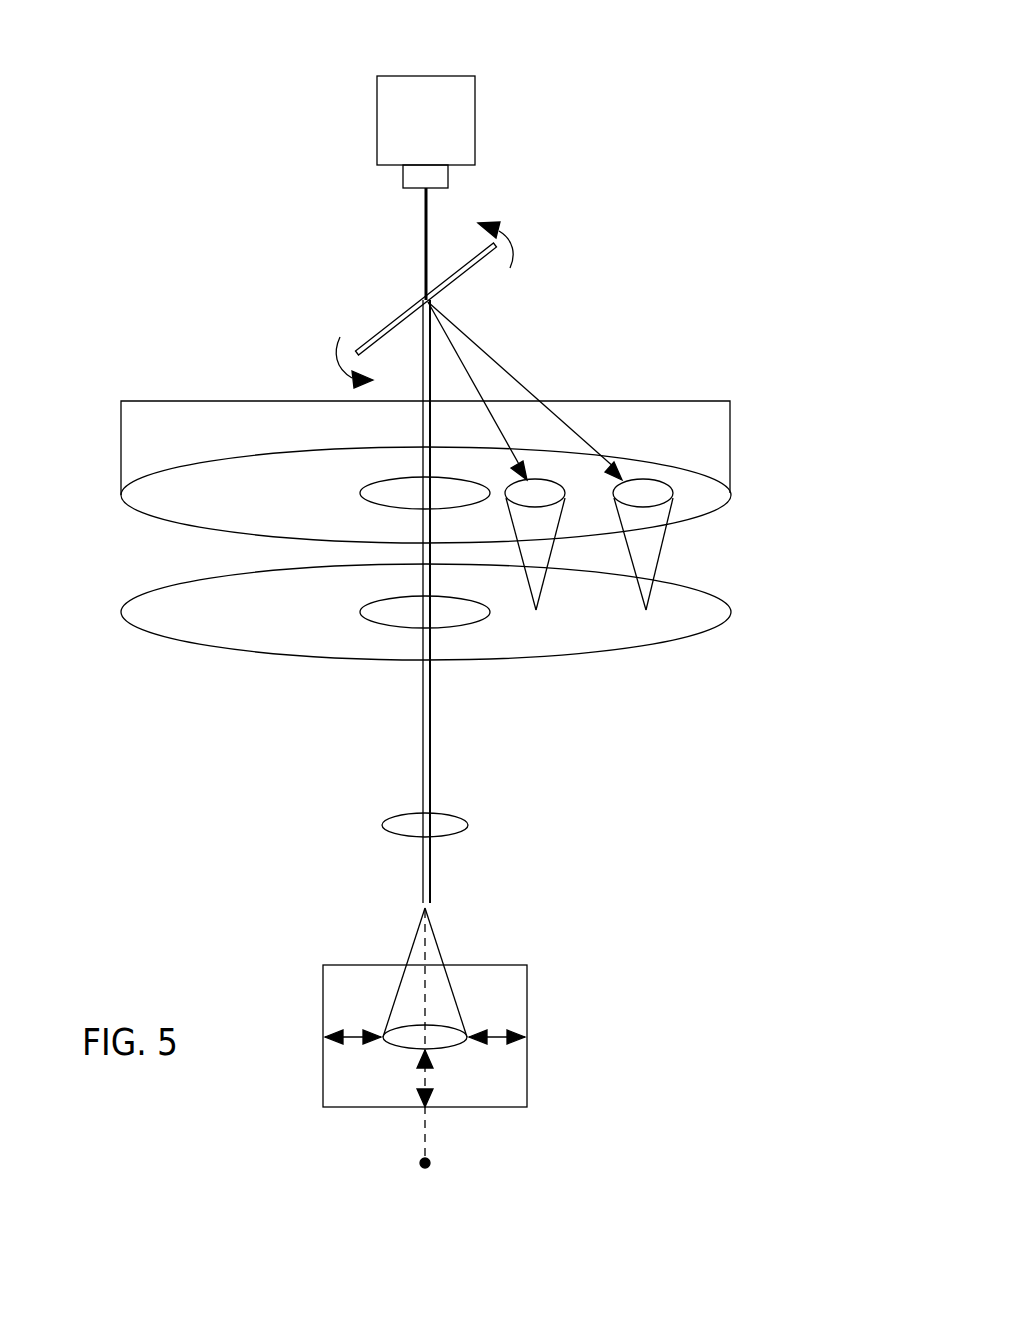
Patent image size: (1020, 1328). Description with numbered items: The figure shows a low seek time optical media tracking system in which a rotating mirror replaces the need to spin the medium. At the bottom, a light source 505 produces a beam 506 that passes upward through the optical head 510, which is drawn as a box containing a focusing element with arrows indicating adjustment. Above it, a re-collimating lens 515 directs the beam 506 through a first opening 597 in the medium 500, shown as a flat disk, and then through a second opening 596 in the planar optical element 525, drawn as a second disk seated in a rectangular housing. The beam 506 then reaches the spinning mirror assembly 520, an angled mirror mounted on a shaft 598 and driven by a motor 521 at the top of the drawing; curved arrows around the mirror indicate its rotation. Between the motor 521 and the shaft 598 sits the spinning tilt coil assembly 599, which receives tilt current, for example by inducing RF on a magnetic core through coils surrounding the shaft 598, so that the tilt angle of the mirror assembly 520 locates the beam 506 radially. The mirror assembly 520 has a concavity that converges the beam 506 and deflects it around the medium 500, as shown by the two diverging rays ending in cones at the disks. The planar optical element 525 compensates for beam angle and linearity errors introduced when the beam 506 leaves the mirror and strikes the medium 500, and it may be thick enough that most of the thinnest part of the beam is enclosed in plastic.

The motor 521 is at (427, 76).
The spinning tilt coil assembly 599 is at (403, 174).
The shaft 598 is at (427, 235).
The spinning mirror assembly 520 is at (385, 325).
The planar optical element 525 is at (641, 423).
The second opening 596 is at (327, 445).
The first opening 597 is at (318, 565).
The medium 500 is at (647, 637).
The beam 506 is at (422, 763).
The re-collimating lens 515 is at (450, 813).
The optical head 510 is at (527, 1000).
The light source 505 is at (425, 1168).